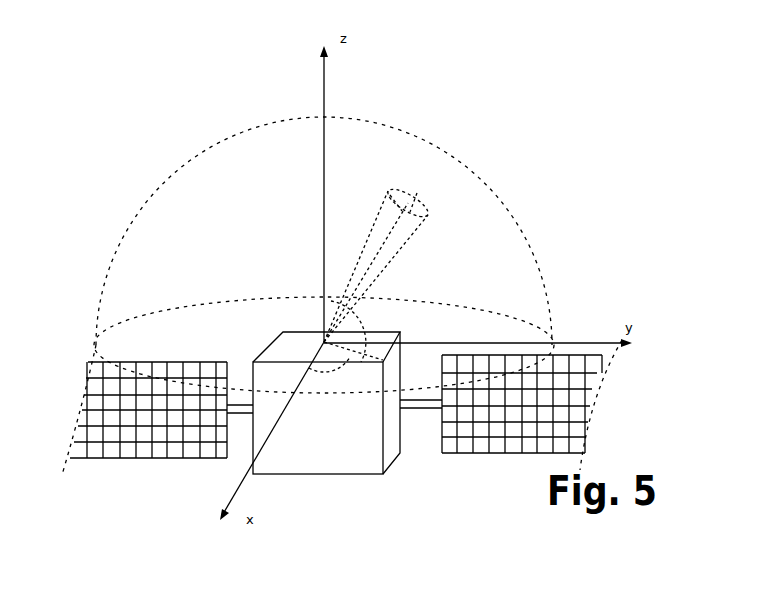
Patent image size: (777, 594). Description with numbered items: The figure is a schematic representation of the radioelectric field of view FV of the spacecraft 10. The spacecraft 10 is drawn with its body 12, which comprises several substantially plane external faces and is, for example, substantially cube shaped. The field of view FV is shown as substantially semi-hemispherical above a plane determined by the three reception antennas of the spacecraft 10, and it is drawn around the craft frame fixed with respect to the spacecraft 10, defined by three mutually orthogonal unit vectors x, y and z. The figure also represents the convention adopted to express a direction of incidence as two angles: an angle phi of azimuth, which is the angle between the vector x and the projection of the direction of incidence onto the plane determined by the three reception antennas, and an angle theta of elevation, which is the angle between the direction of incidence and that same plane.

The spacecraft 10 is at (336, 446).
The body 12 is at (393, 455).
The radioelectric field of view FV is at (506, 205).